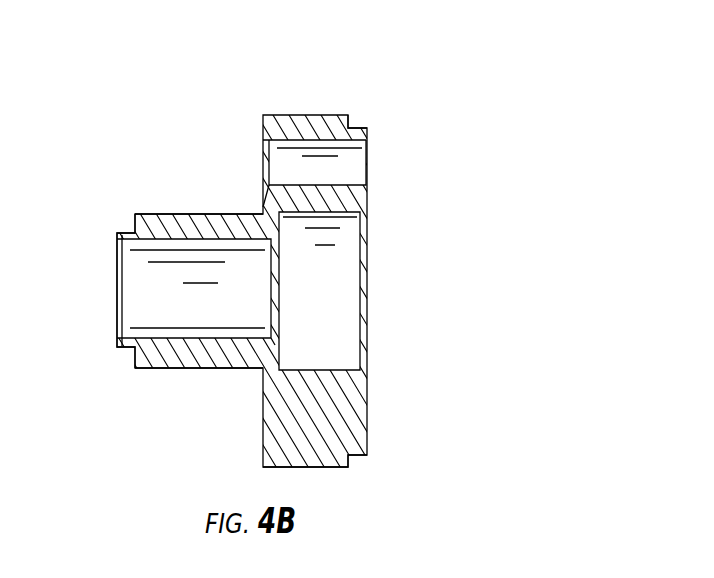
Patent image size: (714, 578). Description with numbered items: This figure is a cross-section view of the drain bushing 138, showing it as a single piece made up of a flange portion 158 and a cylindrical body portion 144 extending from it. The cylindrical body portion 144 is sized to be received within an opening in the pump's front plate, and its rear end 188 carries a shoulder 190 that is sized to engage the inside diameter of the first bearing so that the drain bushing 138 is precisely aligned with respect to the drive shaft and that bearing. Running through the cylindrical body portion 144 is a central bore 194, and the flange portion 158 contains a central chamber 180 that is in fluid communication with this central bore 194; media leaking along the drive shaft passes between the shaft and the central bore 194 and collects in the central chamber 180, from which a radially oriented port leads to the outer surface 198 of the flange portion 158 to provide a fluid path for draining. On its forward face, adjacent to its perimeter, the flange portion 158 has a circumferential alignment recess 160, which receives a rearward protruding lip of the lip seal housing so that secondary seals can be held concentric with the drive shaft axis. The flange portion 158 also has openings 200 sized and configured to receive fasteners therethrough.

The drain bushing 138 is at (505, 148).
The cylindrical body portion 144 is at (192, 214).
The flange portion 158 is at (317, 115).
The alignment recess 160 is at (355, 123).
The central chamber 180 is at (340, 263).
The rear end 188 is at (124, 198).
The shoulder 190 is at (130, 232).
The central bore 194 is at (162, 292).
The outer surface 198 is at (335, 468).
The openings 200 is at (353, 162).